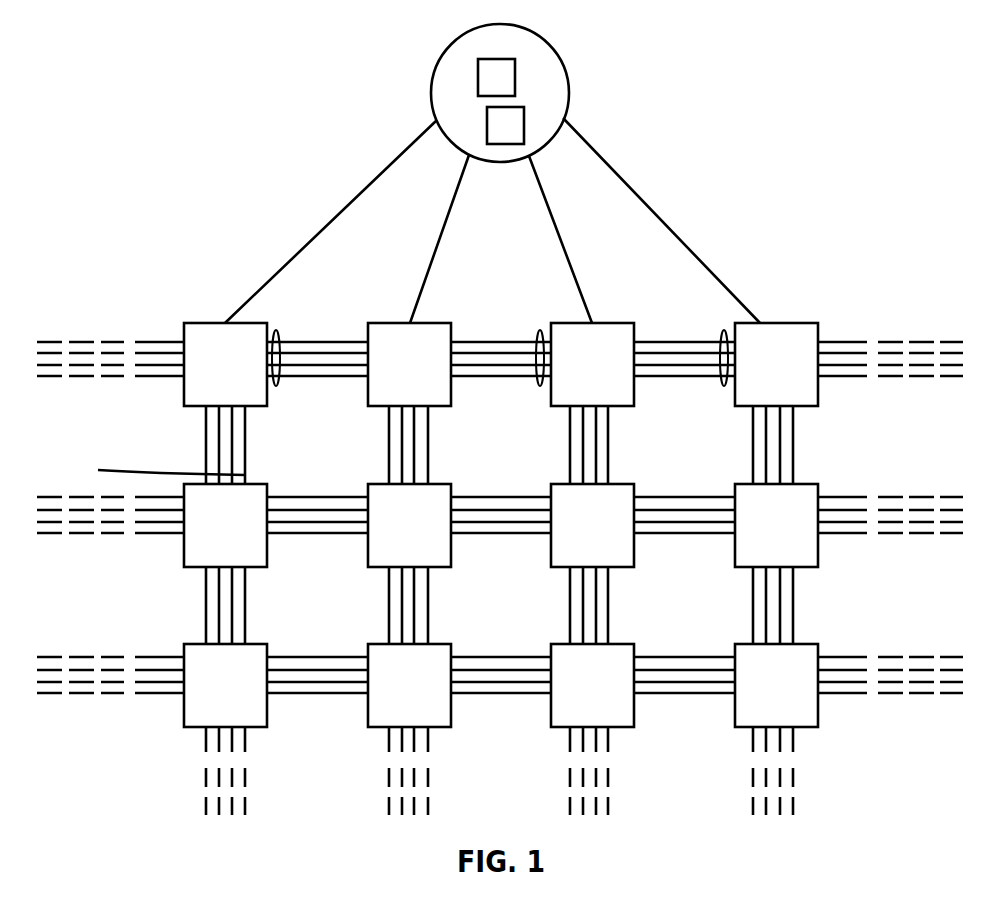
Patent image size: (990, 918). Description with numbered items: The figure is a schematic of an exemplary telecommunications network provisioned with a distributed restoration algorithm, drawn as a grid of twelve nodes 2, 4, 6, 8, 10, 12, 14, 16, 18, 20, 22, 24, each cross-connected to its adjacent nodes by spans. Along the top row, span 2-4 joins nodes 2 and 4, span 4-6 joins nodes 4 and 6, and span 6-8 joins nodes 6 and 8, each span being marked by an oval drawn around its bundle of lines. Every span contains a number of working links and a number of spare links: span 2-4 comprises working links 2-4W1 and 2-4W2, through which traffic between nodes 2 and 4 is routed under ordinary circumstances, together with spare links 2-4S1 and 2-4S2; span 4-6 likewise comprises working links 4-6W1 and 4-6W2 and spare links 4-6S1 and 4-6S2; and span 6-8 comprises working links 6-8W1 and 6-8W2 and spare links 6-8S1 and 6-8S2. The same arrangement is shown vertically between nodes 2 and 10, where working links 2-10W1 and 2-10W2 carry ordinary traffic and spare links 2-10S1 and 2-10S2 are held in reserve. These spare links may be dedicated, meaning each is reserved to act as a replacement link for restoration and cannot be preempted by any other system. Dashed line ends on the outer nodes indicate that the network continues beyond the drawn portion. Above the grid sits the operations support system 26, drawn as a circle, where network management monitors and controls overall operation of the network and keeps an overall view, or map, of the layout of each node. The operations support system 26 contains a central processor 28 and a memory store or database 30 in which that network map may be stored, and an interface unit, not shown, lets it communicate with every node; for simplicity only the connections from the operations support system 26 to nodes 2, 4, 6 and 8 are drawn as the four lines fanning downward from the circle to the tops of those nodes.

The node 2 is at (183, 392).
The node 4 is at (368, 392).
The node 6 is at (551, 392).
The node 8 is at (735, 392).
The node 10 is at (184, 552).
The node 12 is at (368, 552).
The node 14 is at (551, 552).
The node 16 is at (735, 552).
The node 18 is at (184, 713).
The node 20 is at (368, 713).
The node 22 is at (551, 713).
The node 24 is at (735, 713).
The operations support system 26 is at (562, 57).
The central processor 28 is at (478, 78).
The memory store or database 30 is at (524, 118).
The span 2-4 is at (278, 330).
The working link 2-4W1 is at (345, 342).
The working link 2-4W2 is at (310, 353).
The spare link 2-4S1 is at (287, 365).
The spare link 2-4S2 is at (300, 376).
The span 4-6 is at (540, 330).
The working link 4-6W1 is at (483, 342).
The working link 4-6W2 is at (512, 353).
The spare link 4-6S1 is at (483, 365).
The spare link 4-6S2 is at (527, 377).
The span 6-8 is at (723, 330).
The working link 6-8W1 is at (653, 342).
The working link 6-8W2 is at (687, 353).
The spare link 6-8S1 is at (667, 365).
The spare link 6-8S2 is at (707, 376).
The working link 2-10W1 is at (205, 432).
The working link 2-10W2 is at (218, 443).
The spare link 2-10S1 is at (232, 458).
The spare link 2-10S2 is at (132, 446).